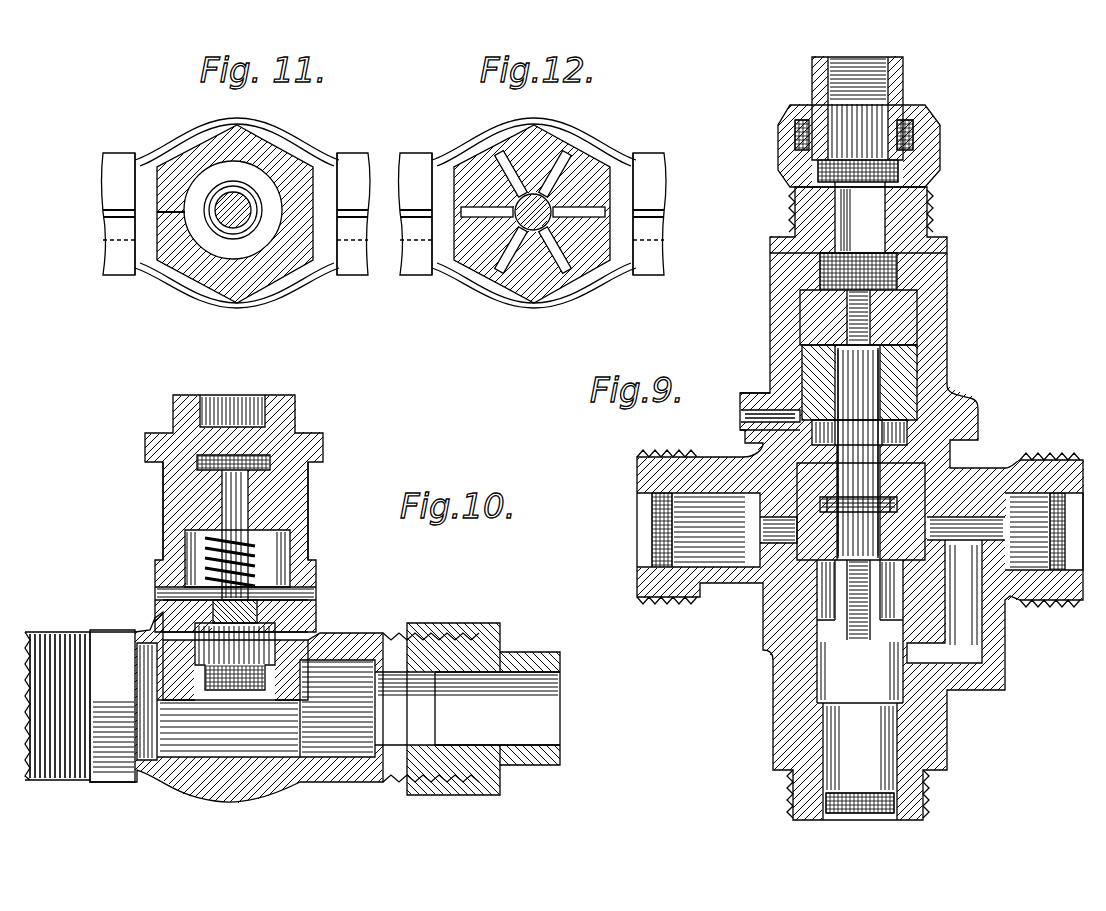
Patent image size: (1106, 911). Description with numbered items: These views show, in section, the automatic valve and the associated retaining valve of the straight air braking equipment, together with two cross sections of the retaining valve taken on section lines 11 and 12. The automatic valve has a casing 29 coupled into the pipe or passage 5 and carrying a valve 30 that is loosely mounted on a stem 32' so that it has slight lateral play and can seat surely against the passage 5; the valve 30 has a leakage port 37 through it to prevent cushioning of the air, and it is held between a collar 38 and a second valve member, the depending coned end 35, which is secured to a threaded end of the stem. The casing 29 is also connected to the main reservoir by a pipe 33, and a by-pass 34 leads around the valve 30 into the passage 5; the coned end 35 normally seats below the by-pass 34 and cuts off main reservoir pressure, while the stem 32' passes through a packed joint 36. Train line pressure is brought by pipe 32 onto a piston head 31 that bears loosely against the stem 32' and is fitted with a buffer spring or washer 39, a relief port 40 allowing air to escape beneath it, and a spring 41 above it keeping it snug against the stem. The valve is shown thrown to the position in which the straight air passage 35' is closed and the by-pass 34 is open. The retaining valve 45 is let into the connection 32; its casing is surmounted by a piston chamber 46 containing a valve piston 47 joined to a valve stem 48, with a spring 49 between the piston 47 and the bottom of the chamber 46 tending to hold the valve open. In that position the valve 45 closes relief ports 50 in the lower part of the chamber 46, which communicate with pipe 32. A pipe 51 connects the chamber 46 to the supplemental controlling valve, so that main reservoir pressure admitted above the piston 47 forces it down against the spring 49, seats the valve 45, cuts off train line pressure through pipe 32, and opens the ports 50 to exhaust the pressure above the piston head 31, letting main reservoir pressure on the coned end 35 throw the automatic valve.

In FIG. 9, the pipe or passage 5 is at (851, 531).
In FIG. 10, the section line 11— 11 is at (127, 556).
In FIG. 10, the section line 12— 12 is at (350, 602).
In FIG. 9, the casing 29 is at (945, 300).
In FIG. 9, the valve 30 is at (975, 475).
In FIG. 9, the piston head 31 is at (905, 318).
In FIG. 10, the pipe 32 is at (491, 709).
In FIG. 9, the pipe 32 is at (834, 119).
In FIG. 9, the stem 32' is at (926, 453).
In FIG. 9, the pipe 33 is at (860, 774).
In FIG. 9, the by-pass 34 is at (975, 625).
In FIG. 9, the coned end (second valve member) 35 is at (860, 631).
In FIG. 9, the straight air passage 35' is at (751, 583).
In FIG. 9, the packed joint 36 is at (905, 445).
In FIG. 9, the leakage port 37 is at (800, 500).
In FIG. 9, the collar 38 is at (858, 521).
In FIG. 9, the buffer spring or washer 39 is at (920, 347).
In FIG. 9, the relief port 40 is at (742, 418).
In FIG. 9, the spring 41 is at (940, 238).
In FIG. 11, the retaining valve 45 is at (215, 290).
In FIG. 12, the retaining valve 45 is at (478, 282).
In FIG. 10, the retaining valve 45 is at (240, 668).
In FIG. 10, the piston chamber 46 is at (255, 540).
In FIG. 10, the valve piston 47 is at (166, 520).
In FIG. 11, the valve stem 48 is at (247, 198).
In FIG. 10, the valve stem 48 is at (300, 504).
In FIG. 11, the spring 49 is at (226, 196).
In FIG. 10, the spring 49 is at (258, 560).
In FIG. 12, the relief ports 50 is at (508, 296).
In FIG. 10, the relief ports 50 is at (162, 603).
In FIG. 10, the pipe 51 is at (234, 502).